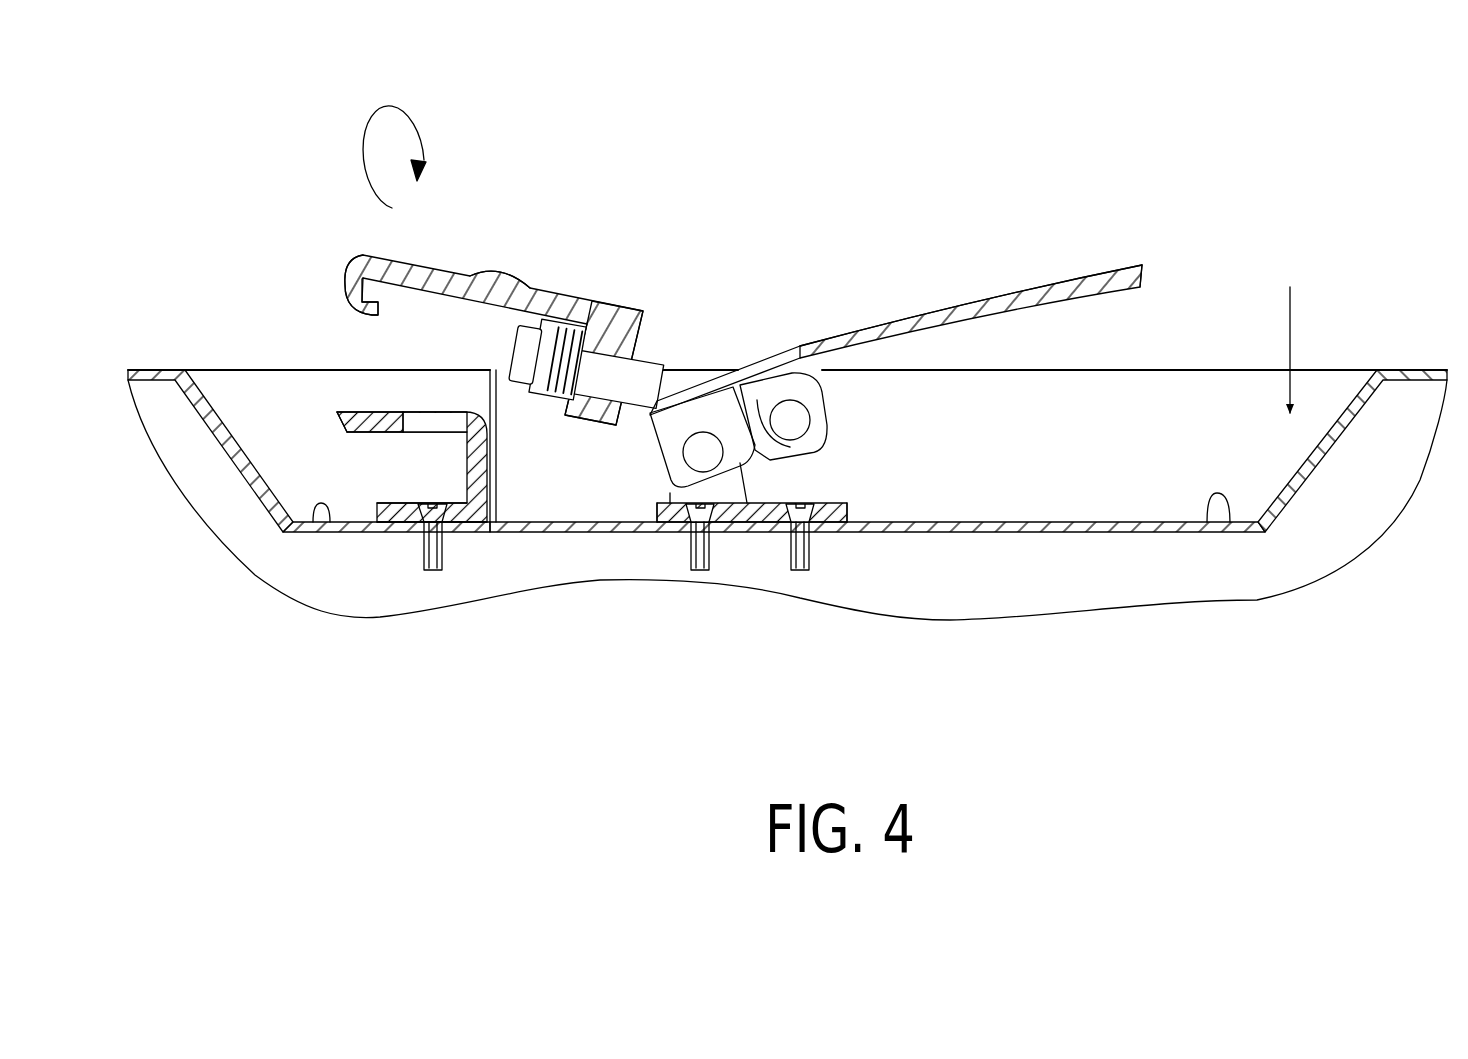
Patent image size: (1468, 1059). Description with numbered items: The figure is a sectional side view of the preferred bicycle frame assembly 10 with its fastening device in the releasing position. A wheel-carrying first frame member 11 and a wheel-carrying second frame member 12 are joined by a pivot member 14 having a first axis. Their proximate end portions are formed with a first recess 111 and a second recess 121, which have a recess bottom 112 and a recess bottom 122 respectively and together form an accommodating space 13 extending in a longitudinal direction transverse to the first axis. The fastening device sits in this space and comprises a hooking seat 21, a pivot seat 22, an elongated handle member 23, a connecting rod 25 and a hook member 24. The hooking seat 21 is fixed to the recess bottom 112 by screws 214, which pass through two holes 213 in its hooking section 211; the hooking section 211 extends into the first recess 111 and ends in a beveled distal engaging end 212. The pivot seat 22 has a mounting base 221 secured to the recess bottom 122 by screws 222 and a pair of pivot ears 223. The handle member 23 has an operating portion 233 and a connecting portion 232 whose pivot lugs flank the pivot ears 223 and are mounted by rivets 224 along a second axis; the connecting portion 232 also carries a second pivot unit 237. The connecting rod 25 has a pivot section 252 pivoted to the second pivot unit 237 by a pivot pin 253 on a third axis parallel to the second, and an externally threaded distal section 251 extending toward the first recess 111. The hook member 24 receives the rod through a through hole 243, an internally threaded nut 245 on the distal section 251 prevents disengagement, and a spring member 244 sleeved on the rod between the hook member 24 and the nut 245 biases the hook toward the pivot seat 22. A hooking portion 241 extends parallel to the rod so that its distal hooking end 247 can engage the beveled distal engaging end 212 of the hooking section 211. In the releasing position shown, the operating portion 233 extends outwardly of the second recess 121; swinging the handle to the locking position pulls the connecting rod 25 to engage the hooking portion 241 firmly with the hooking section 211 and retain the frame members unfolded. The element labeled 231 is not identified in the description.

The bicycle frame assembly 10 is at (1401, 368).
The wheel-carrying first frame member 11 is at (309, 585).
The first recess 111 is at (288, 500).
The recess bottom 112 is at (290, 534).
The wheel-carrying second frame member 12 is at (877, 619).
The second recess 121 is at (1152, 505).
The recess bottom 122 is at (1235, 528).
The accommodating space 13 is at (1148, 393).
The pivot member 14 is at (494, 528).
The hooking seat 21 is at (355, 499).
The hooking section 211 is at (347, 410).
The beveled distal engaging end 212 is at (340, 422).
The holes 213 is at (420, 418).
The screws 214 is at (468, 524).
The pivot seat 22 is at (775, 606).
The mounting base 221 is at (822, 534).
The screws 222 is at (702, 568).
The pivot ears 223 is at (742, 485).
The rivets 224 is at (668, 493).
The elongated handle member 23 is at (843, 412).
The lever arm 231 is at (977, 300).
The connecting portion 232 is at (683, 462).
The operating portion 233 is at (1117, 266).
The second pivot unit 237 is at (826, 395).
The hook member 24 is at (465, 324).
The hooking portion 241 is at (507, 272).
The through hole 243 is at (612, 363).
The spring member 244 is at (556, 398).
The internally threaded nut 245 is at (526, 392).
The distal hooking end 247 is at (353, 305).
The connecting rod 25 is at (807, 319).
The distal section 251 is at (648, 318).
The pivot section 252 is at (785, 383).
The pivot pin 253 is at (800, 427).